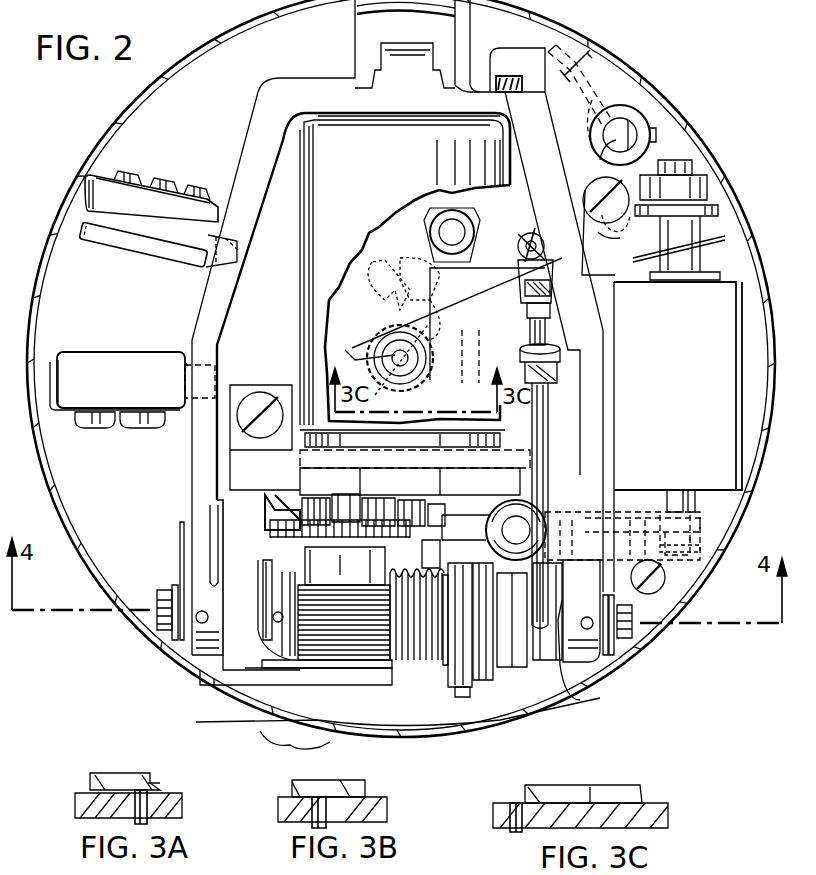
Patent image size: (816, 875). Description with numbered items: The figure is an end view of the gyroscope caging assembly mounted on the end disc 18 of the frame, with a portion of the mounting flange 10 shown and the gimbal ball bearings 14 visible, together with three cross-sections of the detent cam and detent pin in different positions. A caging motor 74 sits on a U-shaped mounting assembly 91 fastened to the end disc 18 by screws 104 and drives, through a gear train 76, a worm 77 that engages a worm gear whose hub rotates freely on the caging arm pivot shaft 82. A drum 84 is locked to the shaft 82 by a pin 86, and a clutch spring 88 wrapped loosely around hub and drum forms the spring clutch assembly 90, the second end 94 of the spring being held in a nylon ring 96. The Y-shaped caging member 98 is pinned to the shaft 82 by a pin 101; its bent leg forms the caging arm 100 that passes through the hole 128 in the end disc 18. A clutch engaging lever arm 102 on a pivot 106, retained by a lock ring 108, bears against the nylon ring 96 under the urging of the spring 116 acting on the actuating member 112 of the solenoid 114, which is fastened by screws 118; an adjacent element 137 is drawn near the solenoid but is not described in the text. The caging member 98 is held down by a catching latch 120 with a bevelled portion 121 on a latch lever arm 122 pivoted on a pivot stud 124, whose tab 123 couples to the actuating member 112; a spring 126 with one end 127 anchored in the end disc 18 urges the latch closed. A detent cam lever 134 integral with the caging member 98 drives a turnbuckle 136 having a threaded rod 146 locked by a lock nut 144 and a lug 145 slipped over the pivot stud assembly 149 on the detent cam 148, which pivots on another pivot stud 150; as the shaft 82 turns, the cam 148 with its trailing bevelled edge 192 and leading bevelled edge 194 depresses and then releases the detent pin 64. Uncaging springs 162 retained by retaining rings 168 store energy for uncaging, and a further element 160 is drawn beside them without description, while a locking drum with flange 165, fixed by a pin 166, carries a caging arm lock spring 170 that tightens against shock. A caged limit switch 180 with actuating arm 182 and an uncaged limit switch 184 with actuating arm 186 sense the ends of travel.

In FIG. 2, the mounting flange 10 is at (264, 735).
In FIG. 2, the ball bearings 14 is at (350, 352).
In FIG. 2, the end disc 18 is at (223, 50).
In FIG. 3A, the end disc 18 is at (183, 806).
In FIG. 3B, the end disc 18 is at (388, 812).
In FIG. 3C, the end disc 18 is at (670, 816).
In FIG. 2, the detent pin 64 is at (392, 330).
In FIG. 3A, the detent pin 64 is at (150, 790).
In FIG. 3B, the detent pin 64 is at (320, 795).
In FIG. 3C, the detent pin 64 is at (512, 800).
In FIG. 2, the caging motor 74 is at (413, 135).
In FIG. 2, the gear train 76 is at (436, 530).
In FIG. 2, the worm 77 is at (342, 650).
In FIG. 2, the caging arm pivot shaft 82 is at (164, 596).
In FIG. 2, the drum 84 is at (482, 705).
In FIG. 2, the pin 86 is at (448, 600).
In FIG. 2, the clutch spring 88 is at (442, 660).
In FIG. 2, the spring clutch assembly 90 is at (418, 685).
In FIG. 2, the U-shaped mounting assembly 91 is at (243, 386).
In FIG. 2, the second end of clutch spring 94 is at (448, 628).
In FIG. 2, the nylon ring 96 is at (452, 690).
In FIG. 2, the Y-shaped caging member 98 is at (275, 78).
In FIG. 2, the caging arm 100 is at (398, 44).
In FIG. 2, the pin 101 is at (208, 617).
In FIG. 2, the clutch engaging lever arm 102 is at (424, 553).
In FIG. 2, the screws 104 is at (282, 500).
In FIG. 2, the pivot 106 is at (498, 520).
In FIG. 2, the lock ring 108 is at (510, 533).
In FIG. 2, the actuating member 112 is at (694, 172).
In FIG. 2, the solenoid 114 is at (694, 478).
In FIG. 2, the spring 116 is at (634, 260).
In FIG. 2, the screws 118 is at (612, 234).
In FIG. 2, the catching latch 120 is at (492, 68).
In FIG. 2, the bevelled portion 121 is at (505, 78).
In FIG. 2, the latch lever arm 122 is at (583, 50).
In FIG. 2, the tab 123 is at (708, 188).
In FIG. 2, the pivot stud 124 is at (602, 160).
In FIG. 2, the spring 126 is at (556, 44).
In FIG. 2, the spring end 127 is at (616, 103).
In FIG. 2, the hole 128 is at (452, 15).
In FIG. 2, the detent cam lever 134 is at (566, 620).
In FIG. 2, the turnbuckle 136 is at (550, 412).
In FIG. 2, the slot 137 is at (700, 542).
In FIG. 2, the lock nut 144 is at (560, 354).
In FIG. 2, the lug 145 is at (520, 300).
In FIG. 2, the threaded rod 146 is at (530, 340).
In FIG. 2, the detent cam 148 is at (416, 265).
In FIG. 3A, the detent cam 148 is at (128, 777).
In FIG. 3B, the detent cam 148 is at (302, 780).
In FIG. 3C, the detent cam 148 is at (633, 787).
In FIG. 2, the pivot stud and lock washer assembly 149 is at (528, 236).
In FIG. 2, the pivot stud 150 is at (460, 230).
In FIG. 2, the plate 160 is at (612, 655).
In FIG. 2, the uncaging springs 162 is at (180, 536).
In FIG. 2, the flange 165 is at (270, 565).
In FIG. 2, the pin 166 is at (273, 614).
In FIG. 2, the retaining rings 168 is at (174, 585).
In FIG. 2, the caging arm lock spring 170 is at (288, 660).
In FIG. 2, the caged limit switch 180 is at (110, 358).
In FIG. 2, the actuating arm 182 is at (186, 360).
In FIG. 2, the uncaged limit switch 184 is at (218, 206).
In FIG. 2, the actuating arm 186 is at (232, 238).
In FIG. 3A, the trailing bevelled edge 192 is at (92, 776).
In FIG. 3B, the trailing bevelled edge 192 is at (290, 787).
In FIG. 3C, the trailing bevelled edge 192 is at (540, 795).
In FIG. 3A, the leading bevelled edge 194 is at (148, 780).
In FIG. 3B, the leading bevelled edge 194 is at (350, 790).
In FIG. 3C, the leading bevelled edge 194 is at (592, 796).